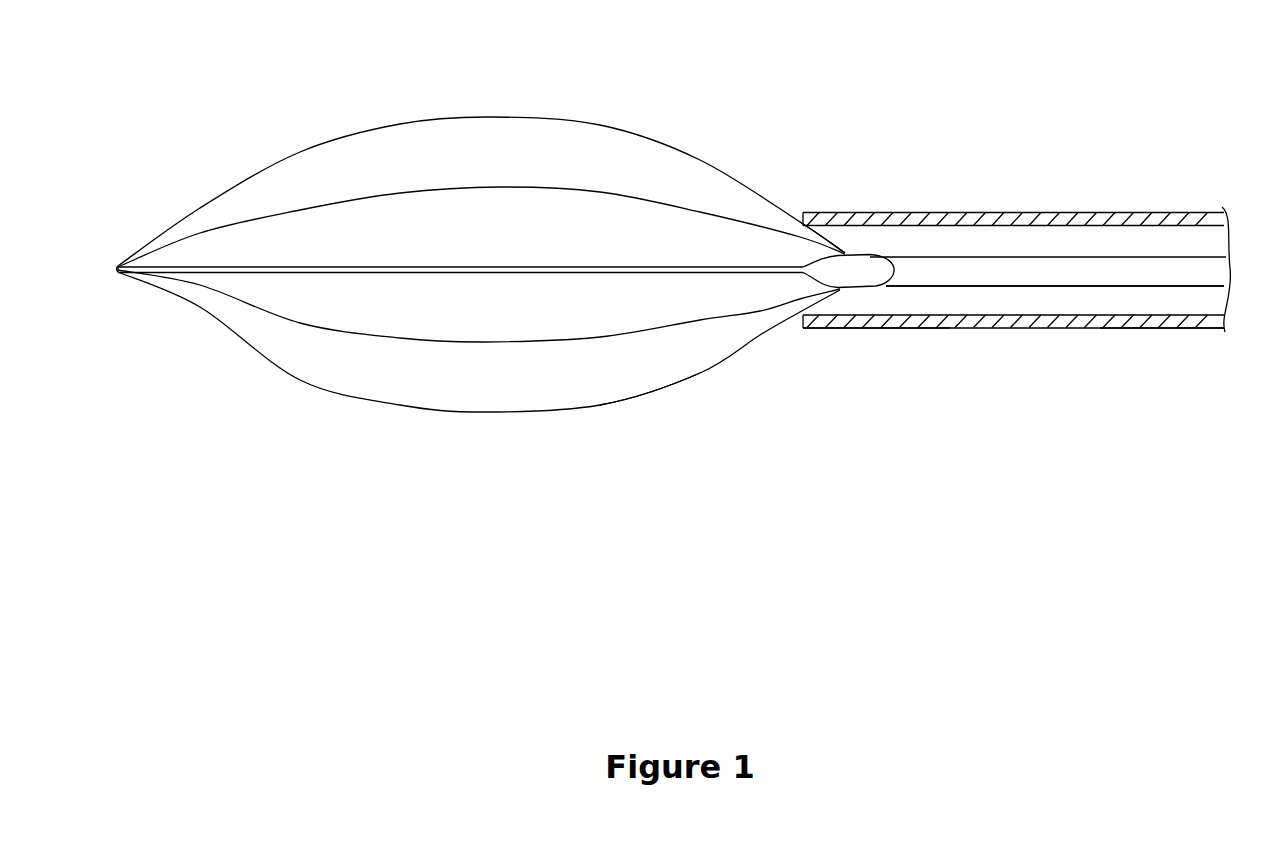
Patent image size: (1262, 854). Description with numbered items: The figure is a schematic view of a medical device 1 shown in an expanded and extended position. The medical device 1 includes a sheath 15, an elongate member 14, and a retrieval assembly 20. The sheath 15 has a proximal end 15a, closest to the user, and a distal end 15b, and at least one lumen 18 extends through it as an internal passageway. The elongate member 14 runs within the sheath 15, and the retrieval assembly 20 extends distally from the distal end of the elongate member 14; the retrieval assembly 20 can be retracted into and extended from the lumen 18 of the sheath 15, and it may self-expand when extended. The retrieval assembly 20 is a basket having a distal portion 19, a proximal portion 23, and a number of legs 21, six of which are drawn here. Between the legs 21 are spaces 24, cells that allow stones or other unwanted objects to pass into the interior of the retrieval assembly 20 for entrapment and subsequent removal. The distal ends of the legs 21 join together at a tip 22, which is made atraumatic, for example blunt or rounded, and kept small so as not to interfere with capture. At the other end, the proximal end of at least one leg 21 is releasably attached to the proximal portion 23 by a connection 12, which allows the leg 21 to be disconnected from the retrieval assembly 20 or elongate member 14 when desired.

The medical device 1 is at (366, 442).
The connection 12 is at (870, 250).
The elongate member 14 is at (1179, 258).
The sheath 15 is at (1004, 210).
The proximal end 15a is at (1204, 335).
The distal end 15b is at (800, 337).
The lumen 18 is at (877, 302).
The distal portion 19 is at (84, 288).
The retrieval assembly 20 is at (732, 403).
The legs 21 is at (663, 145).
The tip 22 is at (123, 262).
The proximal portion 23 is at (848, 238).
The spaces 24 is at (352, 162).